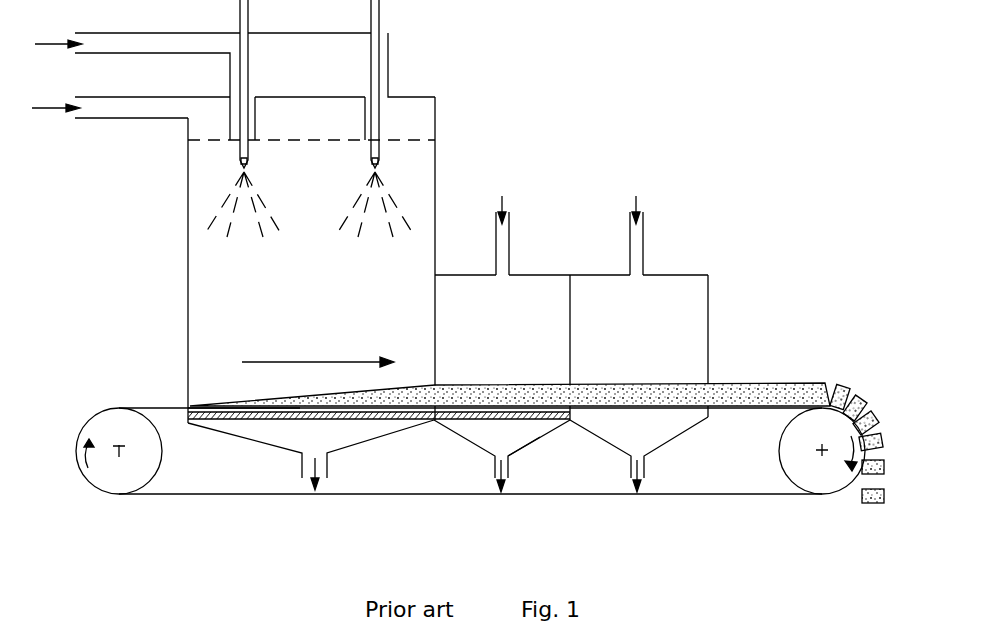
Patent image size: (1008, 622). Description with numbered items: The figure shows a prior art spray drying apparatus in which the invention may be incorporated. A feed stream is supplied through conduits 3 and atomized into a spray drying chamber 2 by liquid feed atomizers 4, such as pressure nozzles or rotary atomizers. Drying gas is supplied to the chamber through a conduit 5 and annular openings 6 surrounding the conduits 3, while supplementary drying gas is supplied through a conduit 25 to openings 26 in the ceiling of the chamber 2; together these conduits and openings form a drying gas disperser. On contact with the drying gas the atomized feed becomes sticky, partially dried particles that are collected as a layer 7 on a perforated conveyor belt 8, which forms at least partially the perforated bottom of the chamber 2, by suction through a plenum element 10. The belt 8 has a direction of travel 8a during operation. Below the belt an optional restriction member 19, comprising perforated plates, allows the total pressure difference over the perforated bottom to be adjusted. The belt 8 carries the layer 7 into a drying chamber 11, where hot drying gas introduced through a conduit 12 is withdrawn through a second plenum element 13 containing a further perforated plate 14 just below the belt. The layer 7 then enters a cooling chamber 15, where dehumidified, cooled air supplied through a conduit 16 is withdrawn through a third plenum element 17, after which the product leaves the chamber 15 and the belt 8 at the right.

The spray drying chamber 2 is at (205, 298).
The conduits 3 is at (247, 16).
The liquid feed atomizers 4 is at (243, 165).
The conduit 5 is at (125, 43).
The annular openings 6 is at (233, 144).
The layer 7 is at (797, 383).
The perforated conveyor belt 8 is at (165, 408).
The direction of travel 8a is at (285, 360).
The plenum element 10 is at (360, 447).
The drying chamber 11 is at (543, 290).
The conduit 12 is at (507, 240).
The second plenum element 13 is at (530, 443).
The perforated plate 14 is at (485, 415).
The cooling chamber 15 is at (693, 318).
The conduit 16 is at (637, 242).
The third plenum element 17 is at (680, 440).
The restriction member 19 is at (235, 413).
The conduit 25 is at (116, 108).
The openings 26 is at (205, 142).